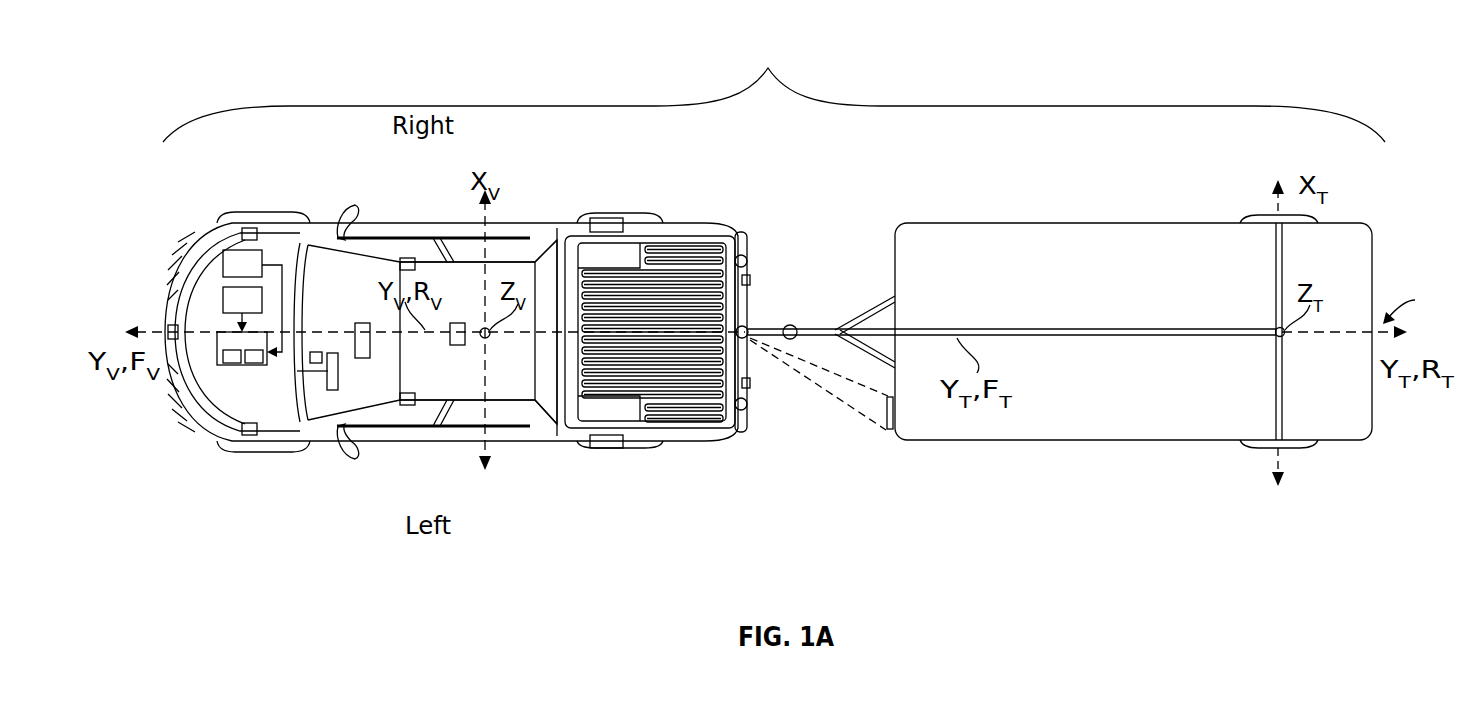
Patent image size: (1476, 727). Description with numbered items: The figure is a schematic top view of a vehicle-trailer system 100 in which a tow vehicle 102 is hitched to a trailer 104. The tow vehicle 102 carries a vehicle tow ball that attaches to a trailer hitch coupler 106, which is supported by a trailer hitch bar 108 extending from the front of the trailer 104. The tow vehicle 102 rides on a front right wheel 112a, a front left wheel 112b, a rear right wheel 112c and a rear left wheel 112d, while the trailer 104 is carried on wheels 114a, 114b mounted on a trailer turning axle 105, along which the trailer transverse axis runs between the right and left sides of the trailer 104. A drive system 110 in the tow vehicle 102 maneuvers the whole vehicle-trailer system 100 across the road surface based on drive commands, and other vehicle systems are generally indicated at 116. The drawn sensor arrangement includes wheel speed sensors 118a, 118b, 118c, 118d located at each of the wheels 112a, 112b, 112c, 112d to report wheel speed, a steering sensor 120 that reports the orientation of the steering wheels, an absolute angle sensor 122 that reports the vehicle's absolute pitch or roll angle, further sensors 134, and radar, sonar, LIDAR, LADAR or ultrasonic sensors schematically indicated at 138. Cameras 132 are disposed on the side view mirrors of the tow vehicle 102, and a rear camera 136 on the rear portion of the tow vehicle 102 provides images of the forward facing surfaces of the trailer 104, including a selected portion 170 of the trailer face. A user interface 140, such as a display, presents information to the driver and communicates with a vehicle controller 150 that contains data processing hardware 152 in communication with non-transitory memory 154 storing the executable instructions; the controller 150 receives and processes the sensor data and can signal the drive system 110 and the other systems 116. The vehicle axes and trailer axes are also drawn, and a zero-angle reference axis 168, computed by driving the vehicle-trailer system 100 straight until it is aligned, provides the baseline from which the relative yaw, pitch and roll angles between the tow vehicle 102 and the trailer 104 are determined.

The vehicle-trailer system 100 is at (774, 90).
The tow vehicle 102 is at (210, 312).
The trailer 104 is at (1120, 317).
The trailer turning axle 105 is at (1274, 280).
The trailer hitch coupler 106 is at (792, 325).
The trailer hitch bar 108 is at (885, 322).
The drive system 110 is at (237, 257).
The front right wheel 112a is at (263, 210).
The front left wheel 112b is at (265, 453).
The rear right wheel 112c is at (636, 212).
The rear left wheel 112d is at (636, 450).
The trailer wheel 114a is at (1265, 214).
The trailer wheel 114b is at (1258, 449).
The other vehicle systems 116 is at (237, 295).
The wheel speed sensor 118a is at (252, 232).
The wheel speed sensor 118b is at (250, 435).
The wheel speed sensor 118c is at (606, 220).
The wheel speed sensor 118d is at (603, 448).
The steering sensor 120 is at (320, 342).
The absolute angle sensor 122 is at (462, 345).
The camera 132 is at (356, 210).
The sensor 134 is at (406, 258).
The rear camera 136 is at (748, 328).
The ranging sensor 138 is at (746, 257).
The user interface 140 is at (371, 340).
The vehicle controller 150 is at (230, 343).
The data processing hardware 152 is at (232, 365).
The non-transitory memory 154 is at (256, 365).
The zero-angle reference axis 168 is at (1422, 306).
The trailer face portion 170 is at (878, 414).